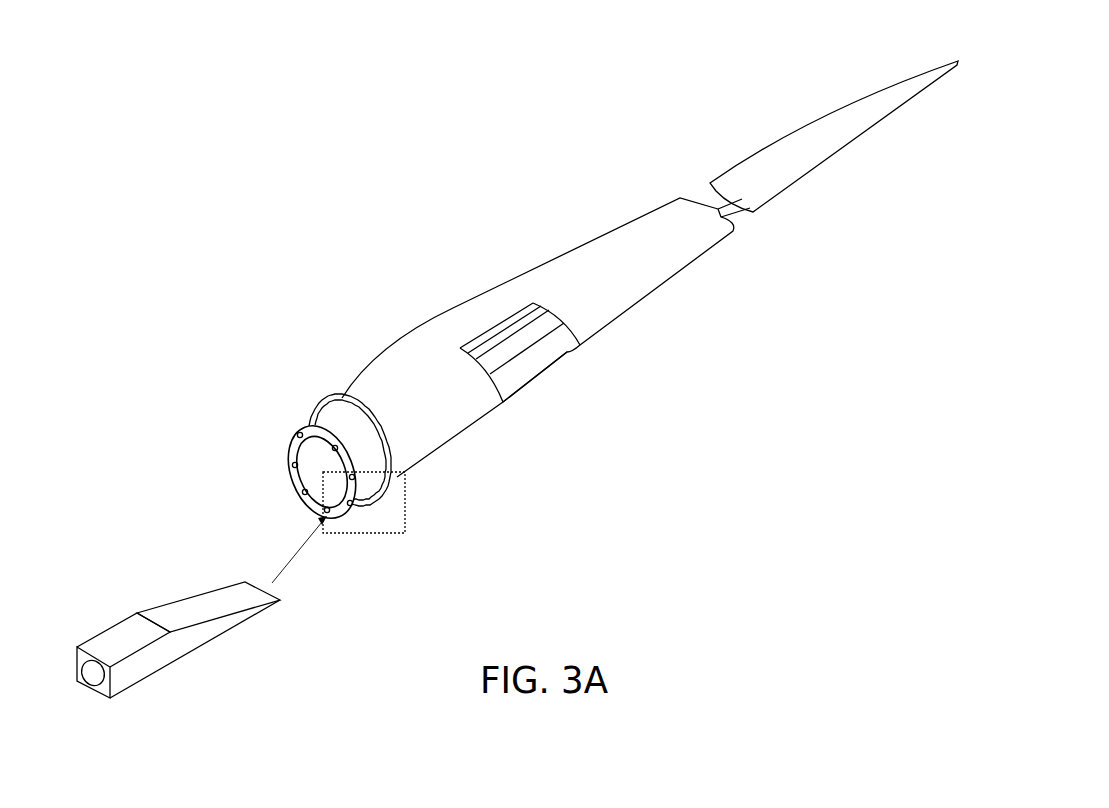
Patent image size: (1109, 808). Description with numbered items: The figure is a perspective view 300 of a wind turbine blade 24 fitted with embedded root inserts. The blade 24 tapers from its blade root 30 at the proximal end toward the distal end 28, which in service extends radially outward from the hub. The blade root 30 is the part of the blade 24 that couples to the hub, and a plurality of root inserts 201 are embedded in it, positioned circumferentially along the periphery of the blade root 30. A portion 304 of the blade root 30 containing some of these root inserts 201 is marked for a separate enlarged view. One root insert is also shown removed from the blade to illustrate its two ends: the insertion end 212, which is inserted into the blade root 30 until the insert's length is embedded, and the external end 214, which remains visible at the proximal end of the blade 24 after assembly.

The perspective view 300 is at (284, 124).
The blade 24 is at (642, 226).
The distal end 28 is at (947, 62).
The blade root 30 is at (330, 423).
The root inserts 201 is at (301, 490).
The portion of the blade root 304 is at (362, 538).
The insertion end 212 is at (247, 585).
The external end 214 is at (112, 638).